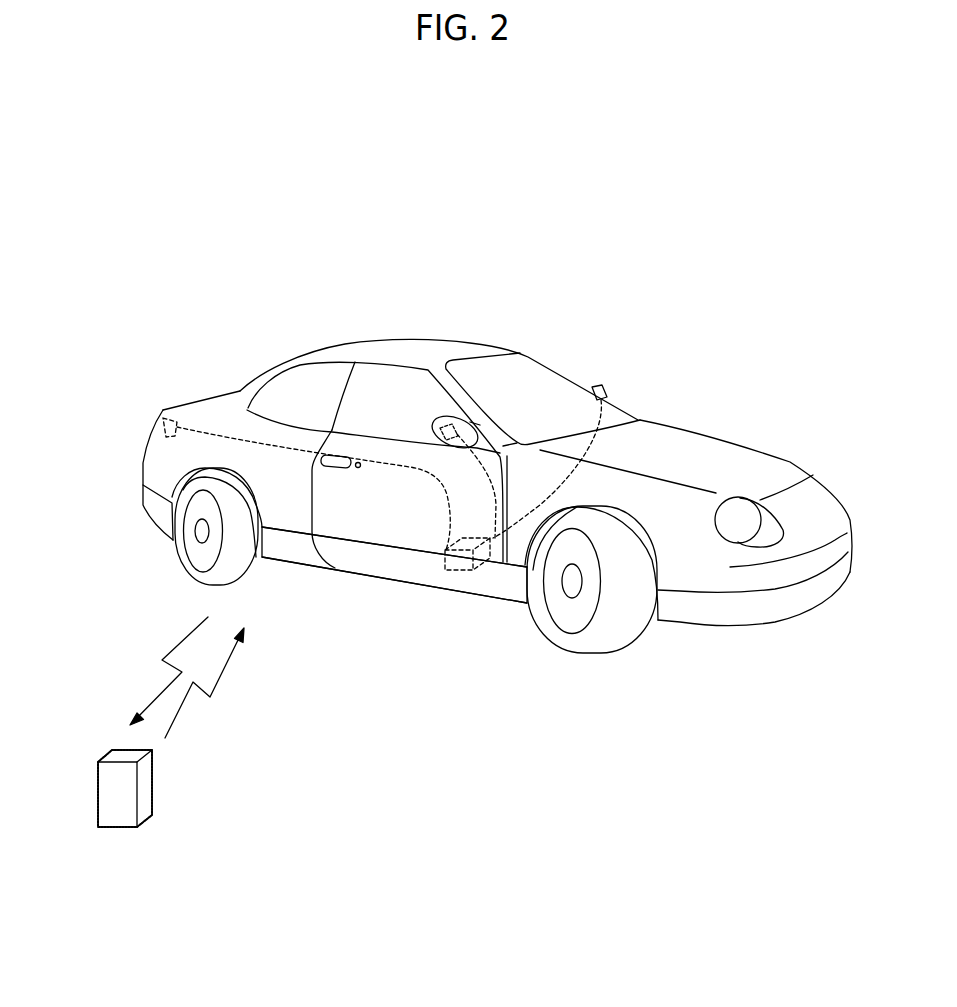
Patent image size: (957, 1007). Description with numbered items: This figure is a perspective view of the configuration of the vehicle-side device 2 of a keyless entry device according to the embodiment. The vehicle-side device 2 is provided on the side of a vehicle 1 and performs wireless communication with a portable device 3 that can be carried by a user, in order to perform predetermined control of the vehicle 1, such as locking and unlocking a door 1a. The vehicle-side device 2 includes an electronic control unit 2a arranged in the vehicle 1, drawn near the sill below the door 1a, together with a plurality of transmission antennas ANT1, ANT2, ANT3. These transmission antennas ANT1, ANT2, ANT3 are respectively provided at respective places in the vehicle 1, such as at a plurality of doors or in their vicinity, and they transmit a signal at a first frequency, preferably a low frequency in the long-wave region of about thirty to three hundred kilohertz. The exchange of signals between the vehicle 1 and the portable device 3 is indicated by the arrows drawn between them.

The vehicle 1 is at (436, 342).
The door 1a is at (358, 527).
The in-vehicle device 2 is at (449, 586).
The communication unit 2a is at (480, 570).
The portable device 3 is at (152, 785).
The first antenna ANT1 is at (607, 381).
The second antenna ANT2 is at (437, 418).
The third antenna ANT3 is at (162, 406).